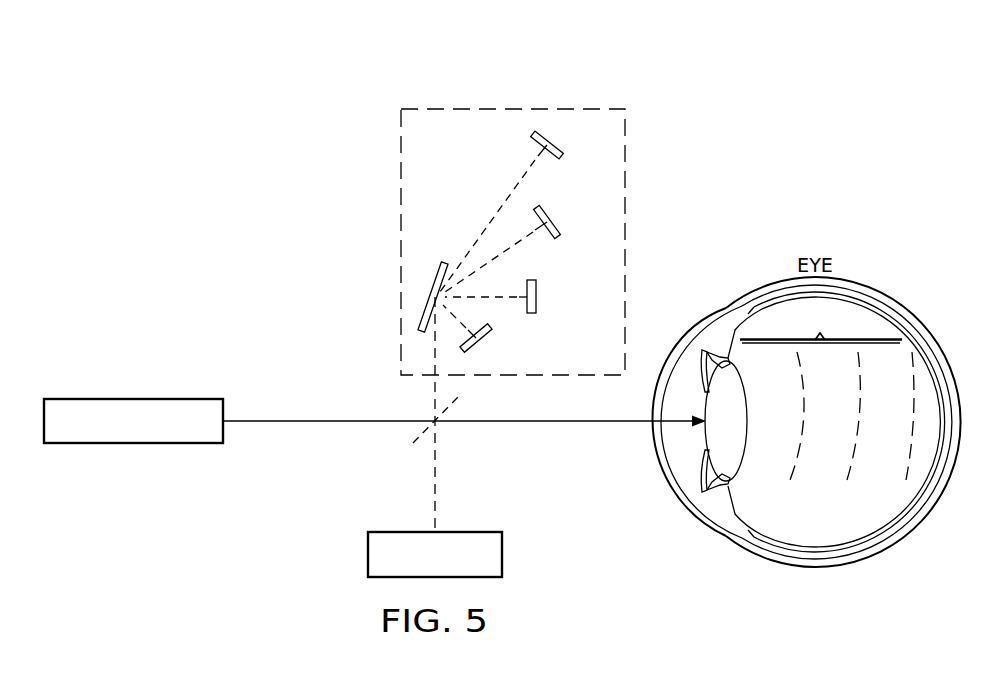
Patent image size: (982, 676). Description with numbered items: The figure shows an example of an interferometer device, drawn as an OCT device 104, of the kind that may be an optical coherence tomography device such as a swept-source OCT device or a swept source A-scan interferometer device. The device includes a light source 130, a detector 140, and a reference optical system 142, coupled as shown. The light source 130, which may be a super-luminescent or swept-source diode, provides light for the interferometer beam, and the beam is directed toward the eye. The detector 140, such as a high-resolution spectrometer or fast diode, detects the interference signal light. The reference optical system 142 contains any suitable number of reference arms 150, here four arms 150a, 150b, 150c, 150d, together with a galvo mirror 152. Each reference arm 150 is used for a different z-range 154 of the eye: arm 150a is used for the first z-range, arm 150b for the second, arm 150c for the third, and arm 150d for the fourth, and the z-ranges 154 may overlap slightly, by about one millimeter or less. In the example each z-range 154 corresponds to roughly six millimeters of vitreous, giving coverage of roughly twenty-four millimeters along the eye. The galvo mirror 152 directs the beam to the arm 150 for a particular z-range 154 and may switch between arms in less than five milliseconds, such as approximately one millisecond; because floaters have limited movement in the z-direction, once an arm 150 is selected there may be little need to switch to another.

The OCT device 104 is at (178, 101).
The light source 130 is at (135, 445).
The detector 140 is at (368, 553).
The reference optical system 142 is at (402, 213).
The reference arms 150 is at (605, 245).
The arm 150a is at (453, 308).
The arm 150b is at (493, 297).
The arm 150c is at (512, 247).
The arm 150d is at (533, 167).
The galvo mirror 152 is at (427, 298).
The z-ranges 154 is at (820, 340).